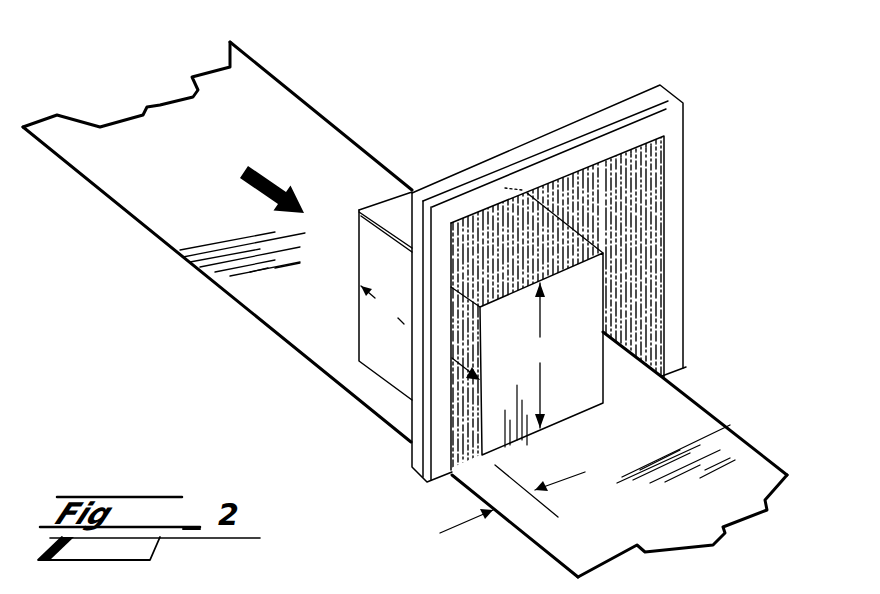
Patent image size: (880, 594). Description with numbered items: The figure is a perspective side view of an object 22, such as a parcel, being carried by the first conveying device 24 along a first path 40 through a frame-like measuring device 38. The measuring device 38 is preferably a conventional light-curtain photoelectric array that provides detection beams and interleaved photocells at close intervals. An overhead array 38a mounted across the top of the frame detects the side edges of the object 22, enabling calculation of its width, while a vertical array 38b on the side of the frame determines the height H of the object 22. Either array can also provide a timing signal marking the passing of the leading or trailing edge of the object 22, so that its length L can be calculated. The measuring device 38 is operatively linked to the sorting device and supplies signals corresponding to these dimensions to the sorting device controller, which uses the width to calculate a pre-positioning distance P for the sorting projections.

The object 22 is at (363, 312).
The first conveying device 24 is at (267, 113).
The measuring device 38 is at (437, 407).
The overhead array 38a is at (587, 180).
The vertical array 38b is at (637, 228).
The first path 40 is at (277, 177).